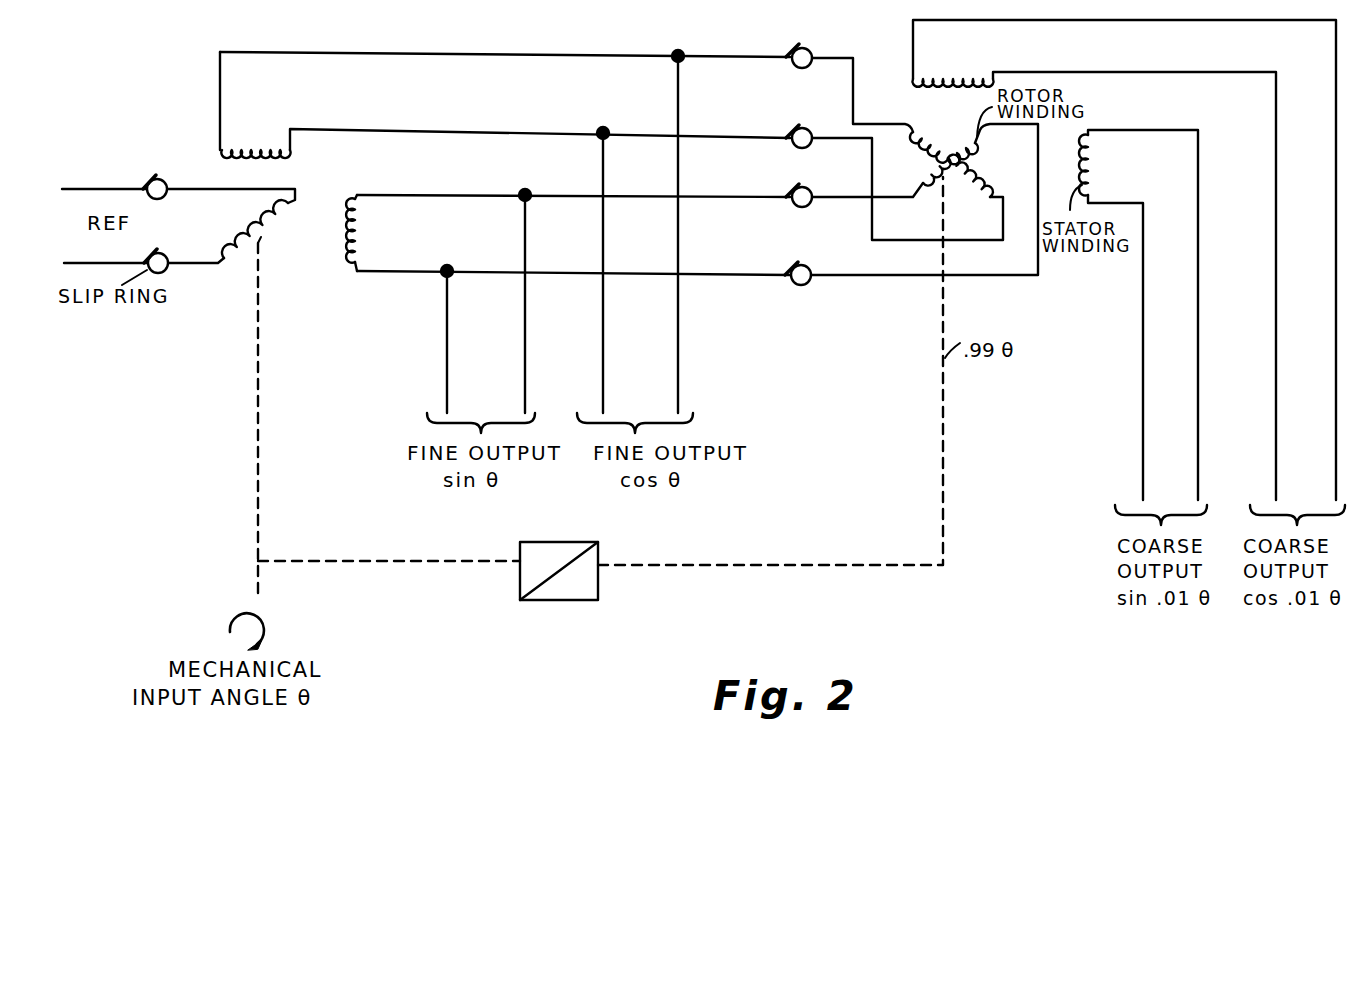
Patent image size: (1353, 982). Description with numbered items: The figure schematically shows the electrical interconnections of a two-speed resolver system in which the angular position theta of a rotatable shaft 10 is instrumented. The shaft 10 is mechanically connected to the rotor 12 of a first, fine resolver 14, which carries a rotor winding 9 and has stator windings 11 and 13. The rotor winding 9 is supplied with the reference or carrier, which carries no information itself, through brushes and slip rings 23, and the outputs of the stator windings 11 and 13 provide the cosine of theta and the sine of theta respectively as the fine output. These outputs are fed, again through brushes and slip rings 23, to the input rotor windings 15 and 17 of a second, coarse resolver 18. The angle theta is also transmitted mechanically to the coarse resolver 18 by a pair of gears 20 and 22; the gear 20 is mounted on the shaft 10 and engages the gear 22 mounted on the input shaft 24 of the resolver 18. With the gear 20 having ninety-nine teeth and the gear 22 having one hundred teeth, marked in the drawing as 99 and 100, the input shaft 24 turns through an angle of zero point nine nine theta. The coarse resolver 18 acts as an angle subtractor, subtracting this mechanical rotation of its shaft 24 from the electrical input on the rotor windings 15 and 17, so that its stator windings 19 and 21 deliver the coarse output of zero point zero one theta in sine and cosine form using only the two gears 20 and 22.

The rotor winding 9 is at (253, 220).
The rotatable shaft 10 is at (261, 588).
The stator winding 11 is at (258, 146).
The rotor 12 is at (261, 240).
The stator winding 13 is at (364, 230).
The first resolver 14 is at (254, 227).
The rotor winding 15 is at (946, 138).
The rotor winding 17 is at (975, 153).
The second resolver 18 is at (924, 166).
The stator winding 19 is at (968, 58).
The gear 20 is at (559, 556).
The stator winding 21 is at (1096, 174).
The gear 22 is at (552, 594).
The brushes and slip rings 23 is at (165, 178).
The input shaft 24 is at (958, 193).
The gear (99 teeth) 99 is at (535, 561).
The gear (100 teeth) 100 is at (574, 588).